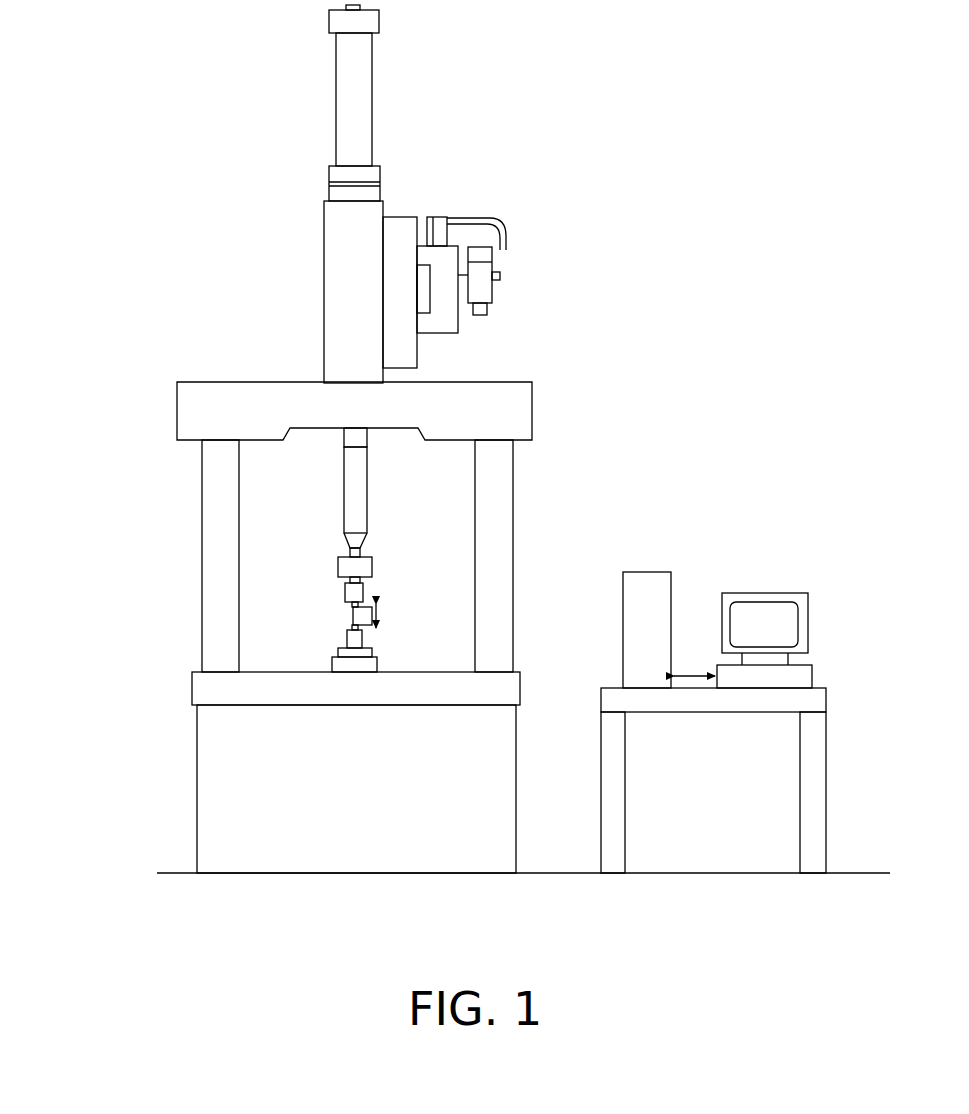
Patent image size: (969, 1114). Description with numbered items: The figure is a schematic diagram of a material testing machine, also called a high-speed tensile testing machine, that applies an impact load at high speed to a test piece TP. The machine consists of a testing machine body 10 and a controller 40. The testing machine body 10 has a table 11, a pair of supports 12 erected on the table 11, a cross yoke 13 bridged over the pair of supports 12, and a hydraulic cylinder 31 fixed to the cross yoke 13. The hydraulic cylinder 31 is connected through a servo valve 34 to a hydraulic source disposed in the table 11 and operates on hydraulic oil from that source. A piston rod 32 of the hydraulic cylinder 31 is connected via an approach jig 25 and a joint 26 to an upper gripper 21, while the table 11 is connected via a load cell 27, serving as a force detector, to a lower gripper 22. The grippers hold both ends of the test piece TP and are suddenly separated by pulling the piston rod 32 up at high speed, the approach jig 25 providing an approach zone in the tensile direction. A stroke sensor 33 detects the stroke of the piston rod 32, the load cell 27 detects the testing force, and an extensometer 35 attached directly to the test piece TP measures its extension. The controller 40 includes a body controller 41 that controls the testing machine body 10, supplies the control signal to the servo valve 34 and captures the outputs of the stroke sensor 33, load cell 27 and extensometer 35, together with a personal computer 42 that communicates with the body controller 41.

The testing machine body 10 is at (250, 140).
The table 11 is at (205, 688).
The pair of supports 12 is at (213, 486).
The cross yoke 13 is at (190, 408).
The upper gripper 21 is at (368, 590).
The lower gripper 22 is at (355, 640).
The approach jig 25 is at (344, 495).
The joint 26 is at (338, 566).
The load cell 27 is at (334, 660).
The hydraulic cylinder 31 is at (336, 260).
The piston rod 32 is at (345, 436).
The stroke sensor 33 is at (372, 21).
The servo valve 34 is at (397, 228).
The extensometer 35 is at (378, 612).
The controller 40 is at (718, 462).
The body controller 41 is at (650, 572).
The personal computer 42 is at (805, 676).
The test piece TP is at (352, 615).